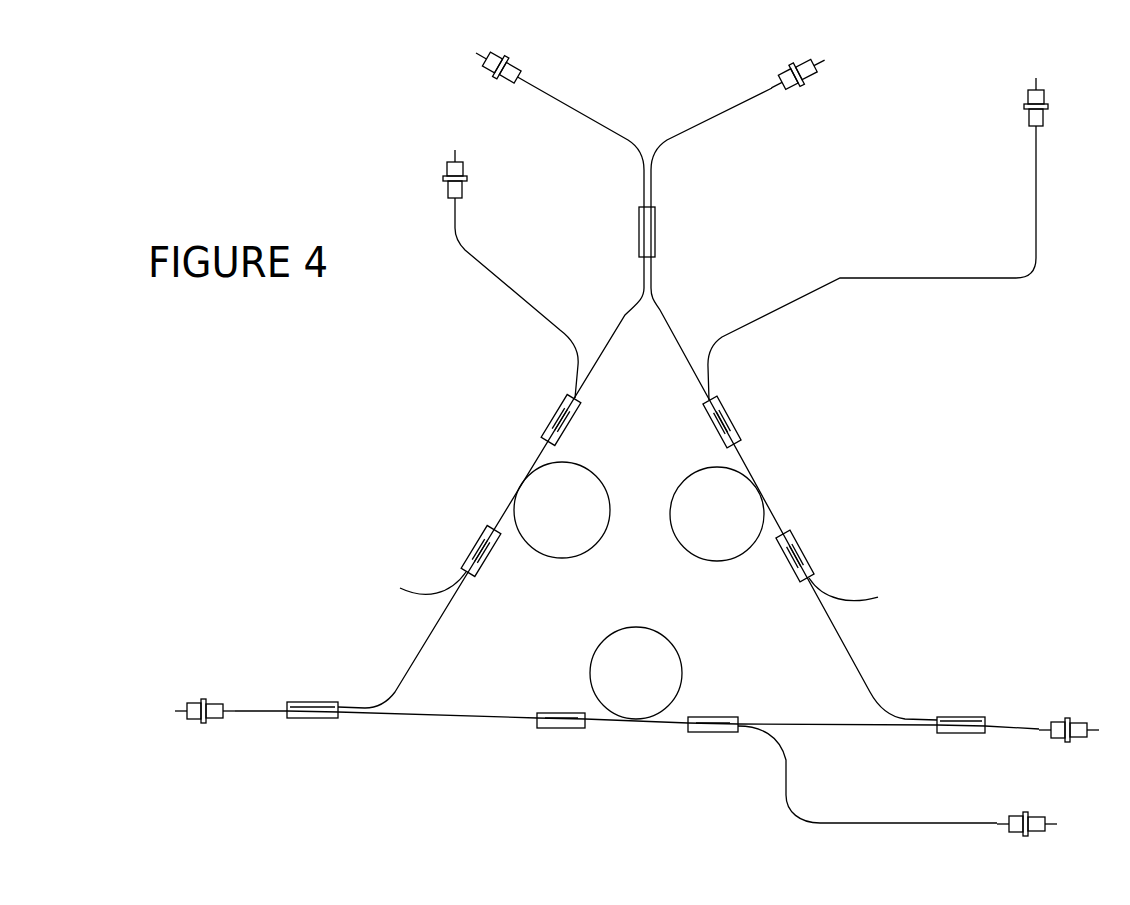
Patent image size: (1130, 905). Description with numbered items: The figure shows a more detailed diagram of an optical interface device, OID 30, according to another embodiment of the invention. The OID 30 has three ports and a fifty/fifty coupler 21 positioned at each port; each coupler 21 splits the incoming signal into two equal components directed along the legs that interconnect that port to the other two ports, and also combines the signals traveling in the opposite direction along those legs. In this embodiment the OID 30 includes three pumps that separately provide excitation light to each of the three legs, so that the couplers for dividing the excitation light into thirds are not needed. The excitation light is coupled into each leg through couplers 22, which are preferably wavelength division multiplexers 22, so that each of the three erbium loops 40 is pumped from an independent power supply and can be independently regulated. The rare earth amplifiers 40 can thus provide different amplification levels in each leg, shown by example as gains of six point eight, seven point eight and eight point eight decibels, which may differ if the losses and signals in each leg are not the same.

The 50/50 coupler 21 is at (656, 232).
The wavelength division multiplexer 22 is at (557, 413).
The optical interface device 30 is at (393, 364).
The erbium loop 40 is at (684, 551).